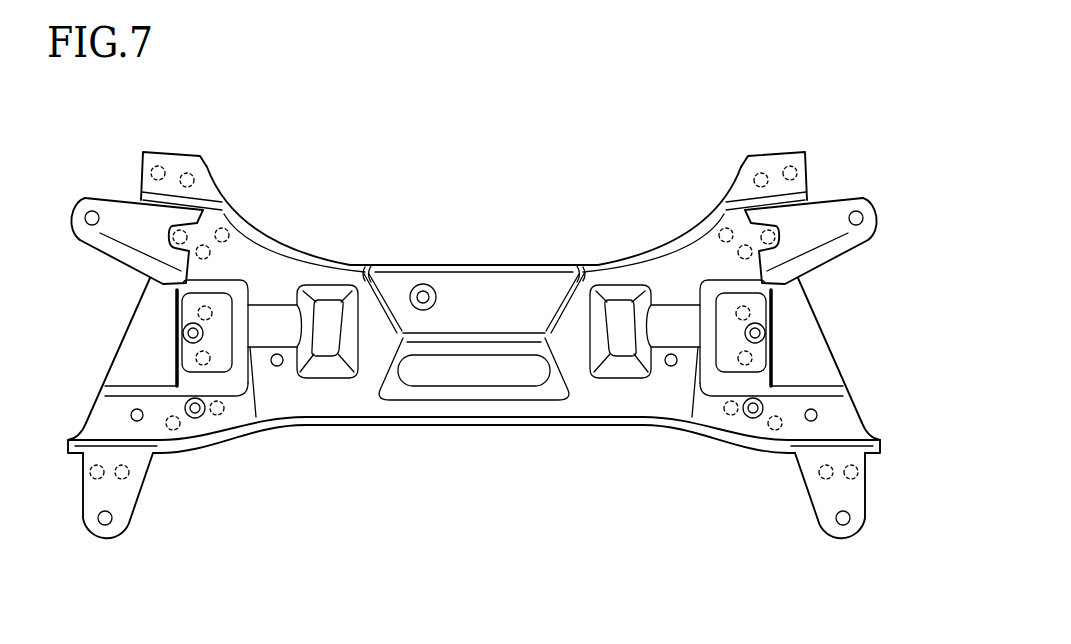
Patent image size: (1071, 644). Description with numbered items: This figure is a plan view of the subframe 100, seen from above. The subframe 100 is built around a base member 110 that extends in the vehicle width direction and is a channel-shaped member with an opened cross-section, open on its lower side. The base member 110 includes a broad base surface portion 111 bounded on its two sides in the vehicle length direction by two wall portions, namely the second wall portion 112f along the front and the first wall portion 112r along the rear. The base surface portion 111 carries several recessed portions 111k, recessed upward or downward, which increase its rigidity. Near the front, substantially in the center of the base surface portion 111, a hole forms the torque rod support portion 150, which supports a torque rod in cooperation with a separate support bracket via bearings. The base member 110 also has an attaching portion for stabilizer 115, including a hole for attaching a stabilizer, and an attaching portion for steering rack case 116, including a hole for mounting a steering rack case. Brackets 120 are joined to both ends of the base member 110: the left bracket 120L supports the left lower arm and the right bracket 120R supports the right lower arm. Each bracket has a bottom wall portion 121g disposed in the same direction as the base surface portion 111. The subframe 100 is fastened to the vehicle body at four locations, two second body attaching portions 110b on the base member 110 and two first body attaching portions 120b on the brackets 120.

The subframe 100 is at (647, 210).
The base member 110 is at (450, 265).
The second body attaching portions 110b is at (111, 526).
The base surface portion 111 is at (362, 390).
The recessed portions 111k is at (325, 348).
The second wall portion 112f is at (548, 263).
The first wall portion 112r is at (258, 418).
The attaching portion for stabilizer 115 is at (197, 414).
The attaching portion for steering rack case 116 is at (183, 333).
The brackets 120 is at (493, 232).
The left bracket 120L is at (134, 254).
The right bracket 120R is at (827, 255).
The first body attaching portions 120b is at (103, 207).
The bottom wall portion 121g is at (147, 312).
The torque rod support portion 150 is at (420, 284).